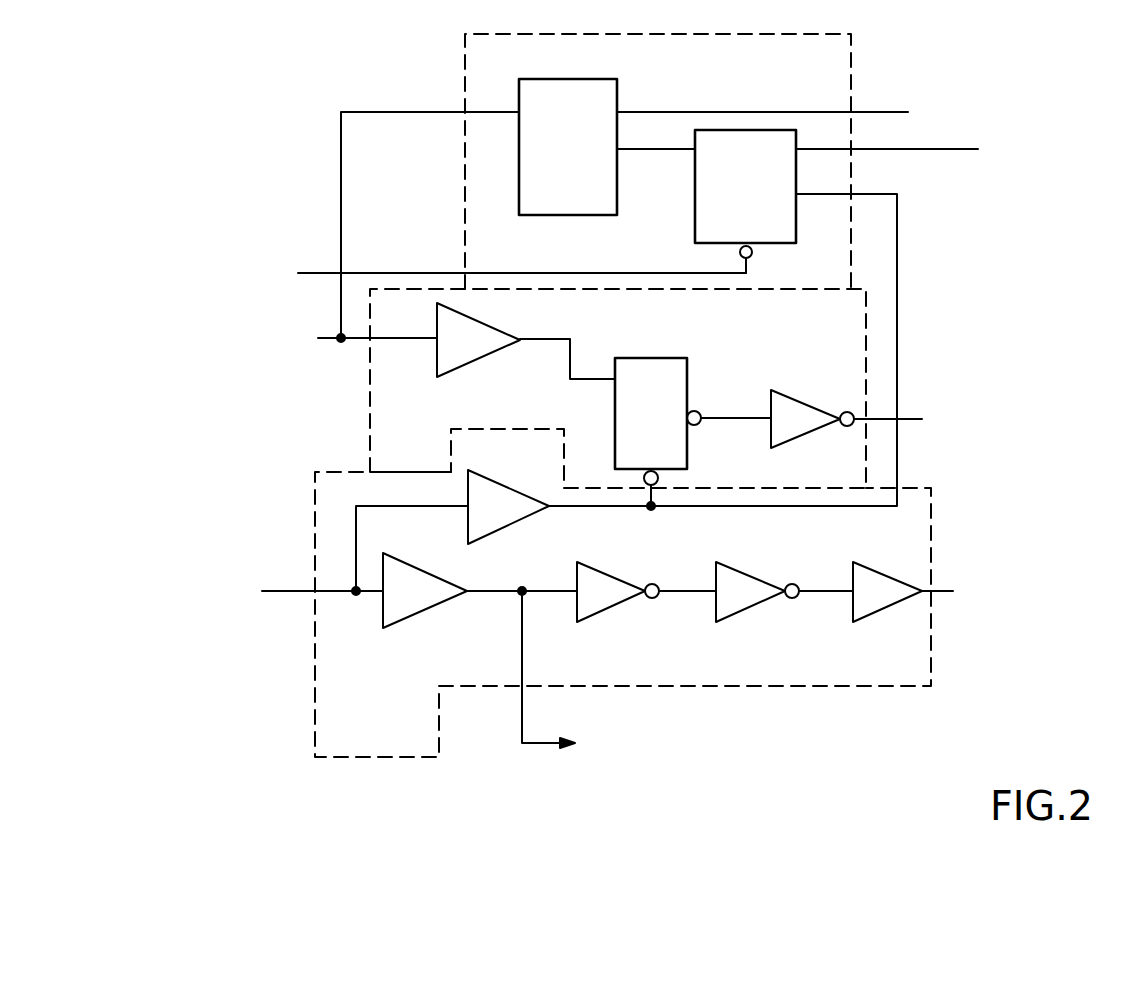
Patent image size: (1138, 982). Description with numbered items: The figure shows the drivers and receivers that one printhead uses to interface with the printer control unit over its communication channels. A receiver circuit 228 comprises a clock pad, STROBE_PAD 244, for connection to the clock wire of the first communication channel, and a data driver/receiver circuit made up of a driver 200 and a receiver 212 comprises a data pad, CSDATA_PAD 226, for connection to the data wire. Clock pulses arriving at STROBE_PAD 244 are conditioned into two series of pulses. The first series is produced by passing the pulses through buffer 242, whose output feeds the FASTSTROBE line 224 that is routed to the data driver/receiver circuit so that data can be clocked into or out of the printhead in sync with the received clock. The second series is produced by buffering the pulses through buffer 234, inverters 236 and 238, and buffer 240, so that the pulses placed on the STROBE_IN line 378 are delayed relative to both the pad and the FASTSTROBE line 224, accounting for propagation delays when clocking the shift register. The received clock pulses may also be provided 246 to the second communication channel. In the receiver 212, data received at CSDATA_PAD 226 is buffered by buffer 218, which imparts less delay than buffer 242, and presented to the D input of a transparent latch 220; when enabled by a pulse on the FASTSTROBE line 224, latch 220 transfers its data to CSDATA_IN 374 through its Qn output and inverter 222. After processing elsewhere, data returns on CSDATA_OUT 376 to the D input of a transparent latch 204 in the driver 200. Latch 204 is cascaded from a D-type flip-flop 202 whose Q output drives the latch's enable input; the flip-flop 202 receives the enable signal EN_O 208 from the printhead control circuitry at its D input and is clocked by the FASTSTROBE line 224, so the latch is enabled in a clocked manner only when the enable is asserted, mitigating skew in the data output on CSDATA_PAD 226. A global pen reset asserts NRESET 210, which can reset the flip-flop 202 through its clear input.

The driver circuit 200 is at (465, 82).
The D-type flip-flop 202 is at (695, 218).
The transparent latch 204 is at (617, 92).
The enable signal EN_O 208 is at (918, 150).
The NRESET 210 is at (312, 273).
The receiver circuit 212 is at (370, 437).
The buffer 218 is at (473, 360).
The transparent latch 220 is at (652, 358).
The inverter 222 is at (787, 392).
The FASTSTROBE line 224 is at (897, 330).
The CSDATA_PAD 226 is at (353, 340).
The receiver circuit 228 is at (830, 688).
The buffer 234 is at (428, 572).
The inverter 236 is at (600, 612).
The inverter 238 is at (740, 610).
The buffer 240 is at (885, 609).
The buffer 242 is at (522, 490).
The STROBE_PAD 244 is at (298, 591).
The clock connection to second communication channel 246 is at (522, 728).
The CSDATA_IN 374 is at (915, 421).
The CSDATA_OUT 376 is at (875, 112).
The STROBE_IN line 378 is at (935, 591).